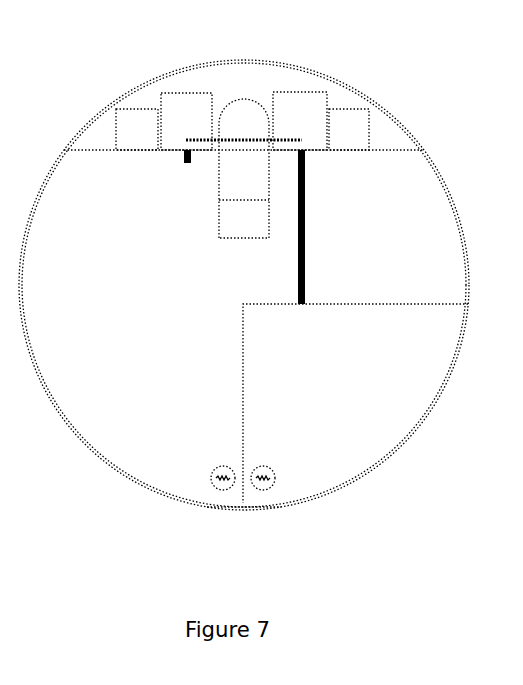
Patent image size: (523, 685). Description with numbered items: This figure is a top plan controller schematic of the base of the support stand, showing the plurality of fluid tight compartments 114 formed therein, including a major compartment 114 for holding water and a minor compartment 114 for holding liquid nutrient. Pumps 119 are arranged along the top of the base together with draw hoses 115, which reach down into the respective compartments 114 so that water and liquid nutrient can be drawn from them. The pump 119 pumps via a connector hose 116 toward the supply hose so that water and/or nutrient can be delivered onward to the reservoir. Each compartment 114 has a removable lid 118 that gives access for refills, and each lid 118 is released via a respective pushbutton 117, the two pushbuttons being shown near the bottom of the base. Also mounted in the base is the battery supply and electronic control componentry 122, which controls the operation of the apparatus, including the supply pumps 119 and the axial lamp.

The compartment 114 is at (168, 300).
The draw hose 115 is at (186, 165).
The connector hose 116 is at (226, 140).
The pushbutton 117 is at (222, 492).
The removable lid 118 is at (113, 438).
The pump 119 is at (186, 92).
The battery supply and electronic control componentry 122 is at (352, 118).